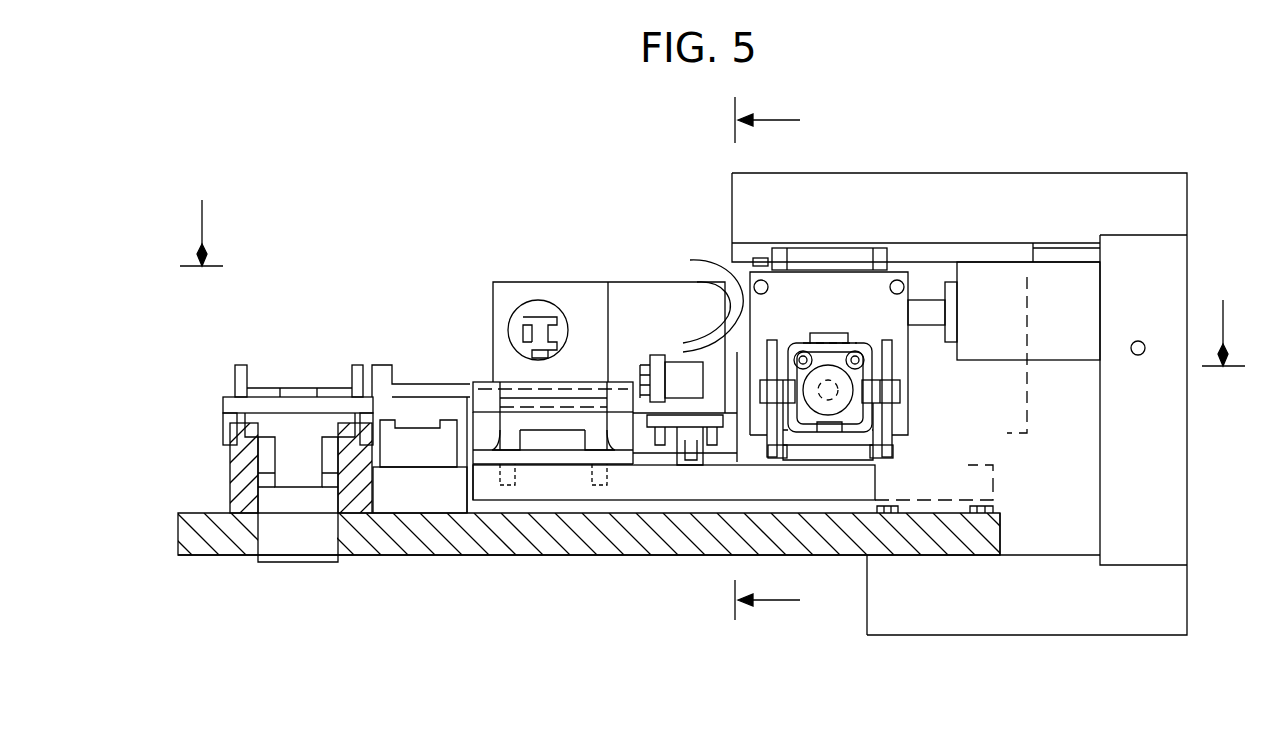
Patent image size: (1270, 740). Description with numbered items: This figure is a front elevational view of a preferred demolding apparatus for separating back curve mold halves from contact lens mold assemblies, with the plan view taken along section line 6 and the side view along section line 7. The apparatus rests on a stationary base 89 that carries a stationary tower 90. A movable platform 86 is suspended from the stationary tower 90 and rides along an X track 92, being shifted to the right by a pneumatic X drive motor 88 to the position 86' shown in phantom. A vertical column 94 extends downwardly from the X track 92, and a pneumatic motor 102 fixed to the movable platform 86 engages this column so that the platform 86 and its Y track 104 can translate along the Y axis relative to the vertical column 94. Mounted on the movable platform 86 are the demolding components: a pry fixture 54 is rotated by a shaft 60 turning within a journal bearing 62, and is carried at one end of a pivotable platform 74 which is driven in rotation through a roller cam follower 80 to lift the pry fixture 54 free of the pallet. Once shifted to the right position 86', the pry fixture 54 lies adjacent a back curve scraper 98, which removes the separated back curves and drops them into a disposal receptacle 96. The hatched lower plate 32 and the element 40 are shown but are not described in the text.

The section line 6- 6 is at (712, 267).
The section line 7- 7 is at (779, 358).
The base plate 32 is at (442, 558).
The mounting plate 40 is at (876, 466).
The pry fixture 54 is at (318, 390).
The shaft 60 is at (515, 388).
The journal bearing 62 is at (585, 380).
The platform 74 is at (553, 458).
The roller cam follower 80 is at (684, 358).
The movable platform 86 is at (674, 482).
The right position of movable platform 86' is at (974, 388).
The pneumatic X drive motor 88 is at (1015, 305).
The stationary base 89 is at (623, 556).
The stationary tower 90 is at (905, 212).
The X track 92 is at (972, 252).
The vertical column 94 is at (848, 305).
The disposal receptacle 96 is at (430, 502).
The back curve scraper 98 is at (433, 461).
The pneumatic motor 102 is at (862, 411).
The Y track 104 is at (877, 470).